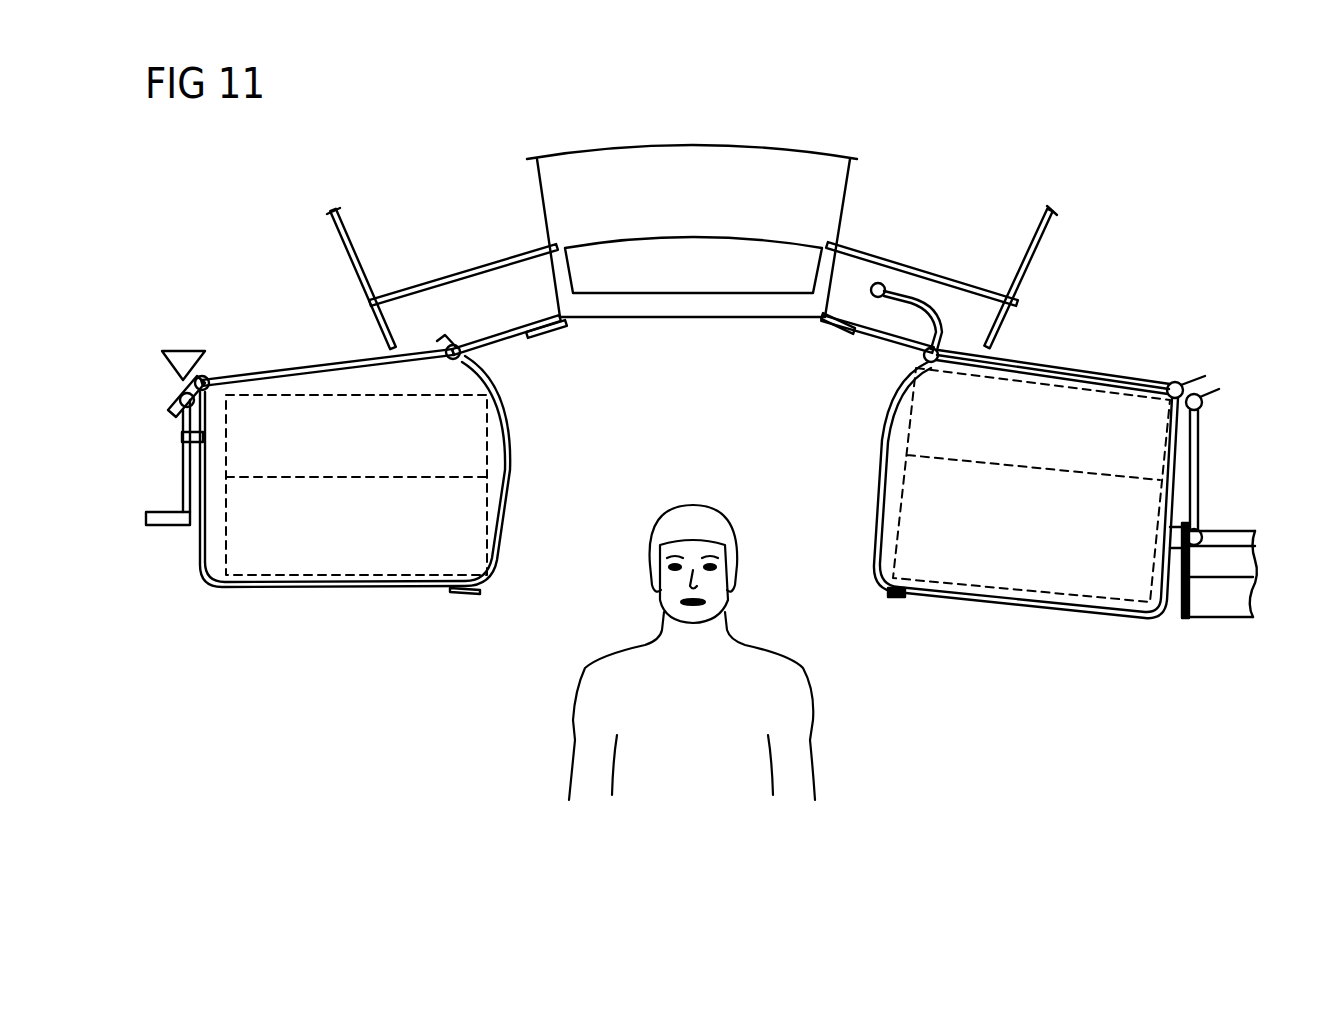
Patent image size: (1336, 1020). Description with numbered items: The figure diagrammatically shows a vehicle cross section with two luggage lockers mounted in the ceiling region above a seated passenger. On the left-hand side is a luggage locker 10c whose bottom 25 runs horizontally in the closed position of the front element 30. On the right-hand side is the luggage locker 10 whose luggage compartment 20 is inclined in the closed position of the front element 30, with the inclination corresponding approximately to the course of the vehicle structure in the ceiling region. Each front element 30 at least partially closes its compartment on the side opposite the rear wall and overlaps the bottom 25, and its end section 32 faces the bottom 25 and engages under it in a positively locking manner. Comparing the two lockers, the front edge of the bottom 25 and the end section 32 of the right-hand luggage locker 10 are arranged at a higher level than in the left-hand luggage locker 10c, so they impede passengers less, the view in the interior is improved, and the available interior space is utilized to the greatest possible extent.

The luggage locker 10 is at (1142, 316).
The luggage locker 10c is at (390, 620).
The luggage compartment 20 is at (1075, 645).
The bottom 25 is at (297, 587).
The front element 30 is at (530, 415).
The end section 32 is at (890, 600).